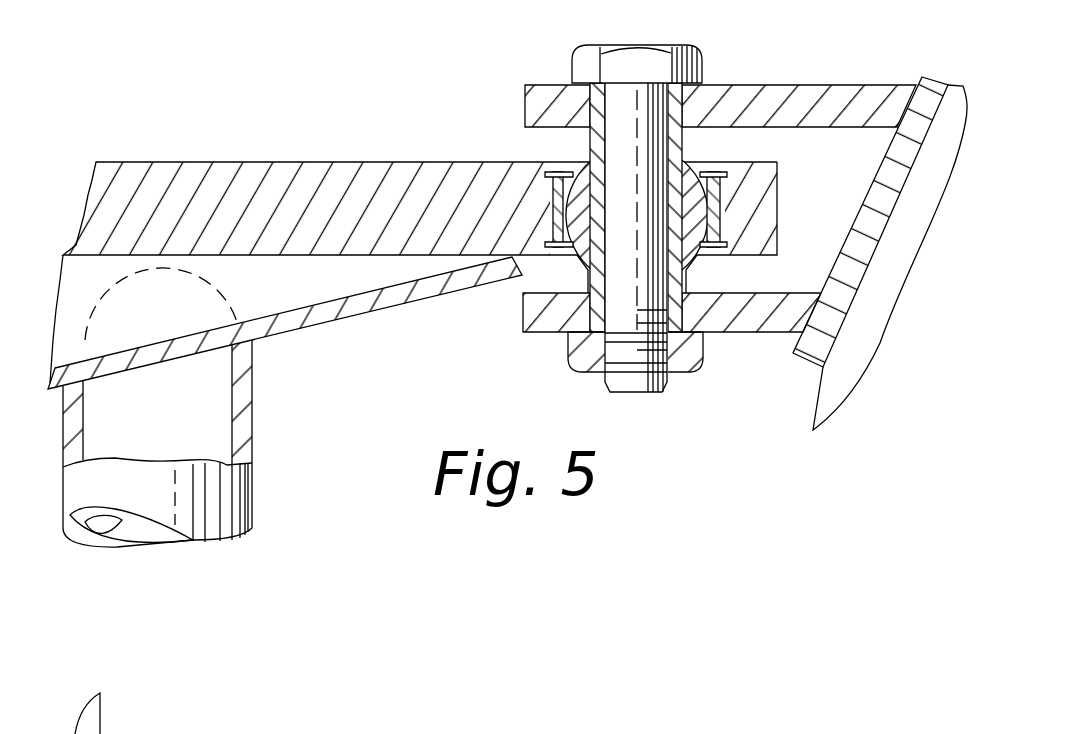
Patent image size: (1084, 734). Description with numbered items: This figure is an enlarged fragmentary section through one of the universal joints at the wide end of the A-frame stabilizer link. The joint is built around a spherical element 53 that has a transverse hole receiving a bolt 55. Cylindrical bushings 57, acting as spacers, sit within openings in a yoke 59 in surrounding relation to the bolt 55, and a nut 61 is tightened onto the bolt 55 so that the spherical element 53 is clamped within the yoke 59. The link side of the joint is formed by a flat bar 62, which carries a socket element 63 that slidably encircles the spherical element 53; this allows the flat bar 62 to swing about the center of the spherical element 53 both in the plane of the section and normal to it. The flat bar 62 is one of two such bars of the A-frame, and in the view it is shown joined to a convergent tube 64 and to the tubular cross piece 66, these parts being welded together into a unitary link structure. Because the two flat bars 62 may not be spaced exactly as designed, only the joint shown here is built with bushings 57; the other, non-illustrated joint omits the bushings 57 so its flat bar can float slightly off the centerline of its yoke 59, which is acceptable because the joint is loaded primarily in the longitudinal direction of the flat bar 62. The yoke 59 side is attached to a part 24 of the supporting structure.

The blade 24 is at (817, 403).
The spherical element 53 is at (700, 222).
The bolt 55 is at (587, 70).
The cylindrical bushings 57 is at (677, 108).
The yoke 59 is at (828, 98).
The nut 61 is at (690, 358).
The flat bar 62 is at (320, 162).
The socket element 63 is at (713, 190).
The convergent tube 64 is at (383, 298).
The tubular cross piece 66 is at (237, 490).